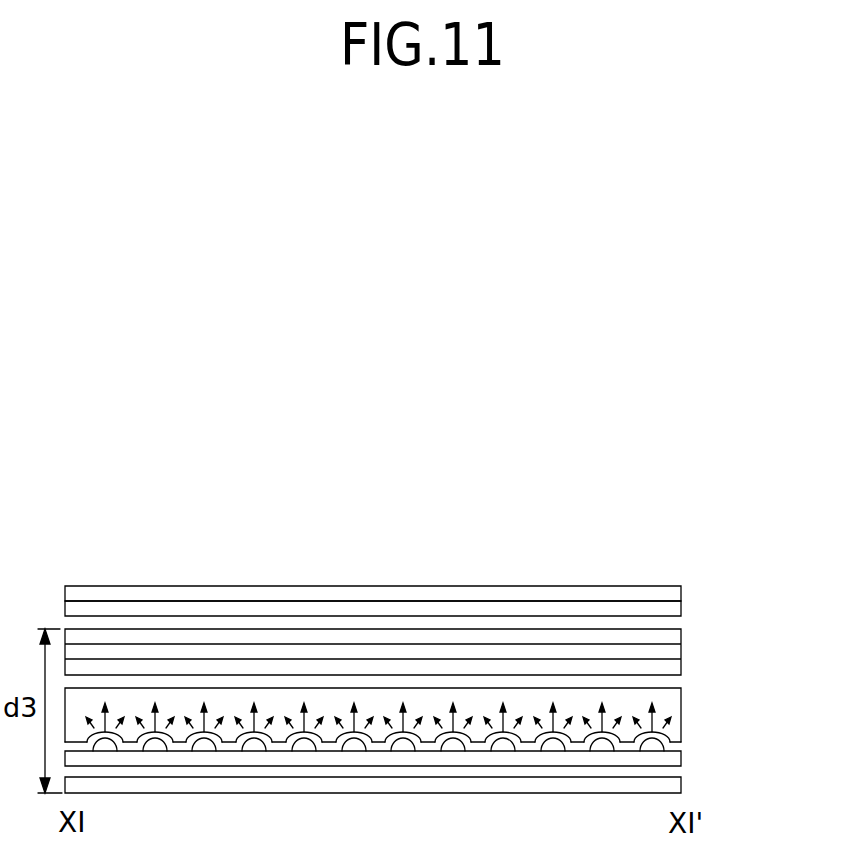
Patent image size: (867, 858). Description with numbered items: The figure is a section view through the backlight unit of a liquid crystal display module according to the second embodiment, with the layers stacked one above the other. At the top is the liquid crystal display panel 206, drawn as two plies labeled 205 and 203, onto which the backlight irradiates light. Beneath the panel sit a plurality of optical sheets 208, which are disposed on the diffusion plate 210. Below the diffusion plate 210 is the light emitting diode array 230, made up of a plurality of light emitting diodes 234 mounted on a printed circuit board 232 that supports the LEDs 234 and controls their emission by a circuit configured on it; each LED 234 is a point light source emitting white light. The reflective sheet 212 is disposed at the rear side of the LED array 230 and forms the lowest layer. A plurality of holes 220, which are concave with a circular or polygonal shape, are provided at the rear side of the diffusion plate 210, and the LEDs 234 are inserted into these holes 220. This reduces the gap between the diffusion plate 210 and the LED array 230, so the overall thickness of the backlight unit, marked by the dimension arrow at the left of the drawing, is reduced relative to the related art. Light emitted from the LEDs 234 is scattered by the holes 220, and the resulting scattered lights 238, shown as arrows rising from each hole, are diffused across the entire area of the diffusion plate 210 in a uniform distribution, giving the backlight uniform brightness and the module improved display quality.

The polarizing plate 203 is at (682, 611).
The retardation film 205 is at (682, 590).
The liquid crystal display panel 206 is at (447, 596).
The optical sheets 208 is at (682, 631).
The diffusion plate 210 is at (682, 693).
The reflective sheet 212 is at (682, 786).
The holes 220 is at (507, 740).
The light emitting diode array 230 is at (447, 772).
The printed circuit board 232 is at (682, 759).
The light emitting diodes 234 is at (661, 746).
The scattered lights 238 is at (577, 742).